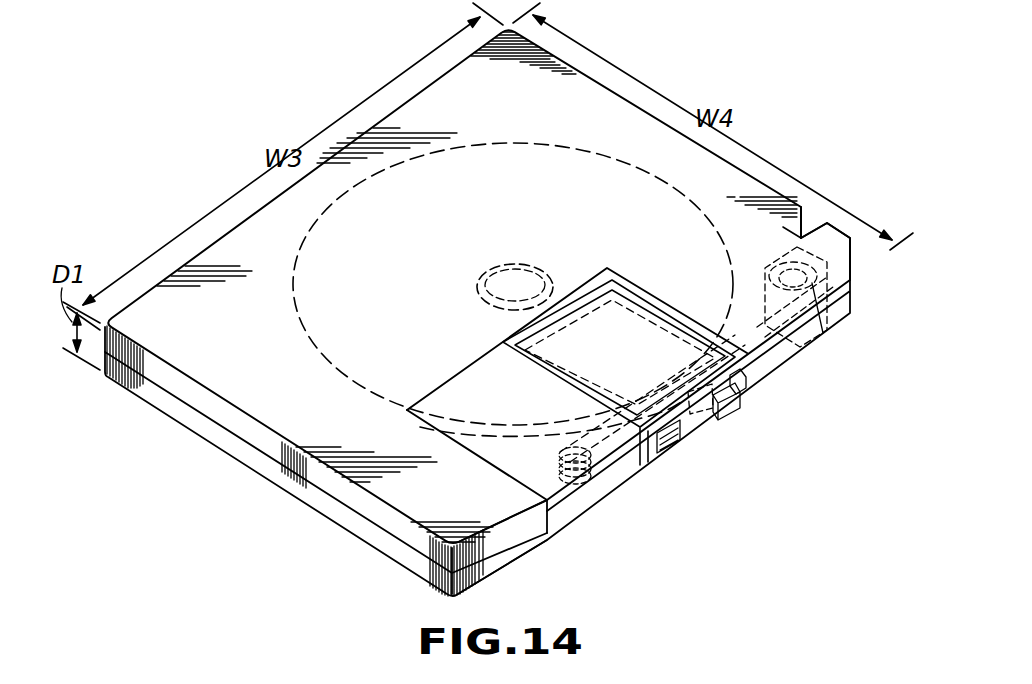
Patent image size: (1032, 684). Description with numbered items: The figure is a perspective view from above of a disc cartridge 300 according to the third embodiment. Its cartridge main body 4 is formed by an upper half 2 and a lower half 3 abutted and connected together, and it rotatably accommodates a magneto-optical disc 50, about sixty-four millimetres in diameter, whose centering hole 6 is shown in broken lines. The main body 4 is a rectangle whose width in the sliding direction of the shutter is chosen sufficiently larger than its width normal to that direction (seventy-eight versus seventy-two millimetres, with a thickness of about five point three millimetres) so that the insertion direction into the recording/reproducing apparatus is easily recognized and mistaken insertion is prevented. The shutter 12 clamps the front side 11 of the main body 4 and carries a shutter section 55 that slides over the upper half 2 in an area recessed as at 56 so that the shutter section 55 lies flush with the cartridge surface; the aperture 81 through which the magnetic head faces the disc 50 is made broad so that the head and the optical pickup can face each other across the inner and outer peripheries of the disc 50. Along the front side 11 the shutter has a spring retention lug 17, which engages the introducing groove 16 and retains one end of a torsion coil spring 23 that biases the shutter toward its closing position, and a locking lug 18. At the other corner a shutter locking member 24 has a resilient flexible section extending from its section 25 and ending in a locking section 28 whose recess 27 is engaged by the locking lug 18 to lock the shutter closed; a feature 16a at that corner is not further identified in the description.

The disc cartridge 300 is at (110, 378).
The upper half 2 is at (223, 423).
The lower half 3 is at (240, 450).
The cartridge main body 4 is at (207, 513).
The magneto-optical disc 50 is at (300, 328).
The centering hole 6 is at (509, 263).
The shutter section 55 is at (590, 280).
The recess 56 is at (453, 387).
The aperture 81 is at (628, 298).
The torsion coil spring 23 is at (565, 482).
The front side 11 is at (520, 557).
The spring retention lug 17 is at (672, 447).
The shutter 12 is at (700, 437).
The locking lug 18 is at (737, 395).
The locking section 28 is at (748, 340).
The recess 27 is at (730, 400).
The shutter locking member 24 is at (802, 347).
The introducing groove 16 is at (814, 353).
The section 25 is at (827, 330).
The corner notch 16a is at (852, 308).